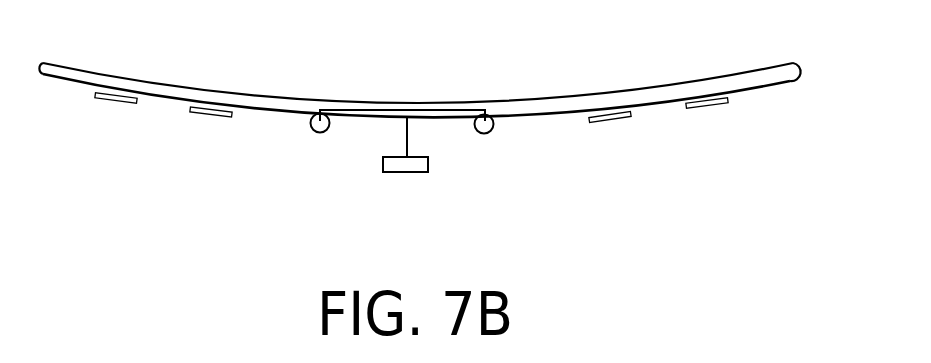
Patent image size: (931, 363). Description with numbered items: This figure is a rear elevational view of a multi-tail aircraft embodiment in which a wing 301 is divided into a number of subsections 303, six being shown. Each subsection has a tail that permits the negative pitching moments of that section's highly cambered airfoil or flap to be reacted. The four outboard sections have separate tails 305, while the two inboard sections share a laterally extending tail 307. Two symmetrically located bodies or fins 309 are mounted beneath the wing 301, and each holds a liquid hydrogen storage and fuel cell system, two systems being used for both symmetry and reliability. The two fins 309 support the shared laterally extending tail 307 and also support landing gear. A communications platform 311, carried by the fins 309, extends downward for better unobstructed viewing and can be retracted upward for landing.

The wing 301 is at (258, 108).
The subsections 303 is at (211, 100).
The separate tails 305 is at (612, 110).
The laterally extending tail 307 is at (453, 117).
The fins 309 is at (494, 122).
The communications platform 311 is at (402, 162).